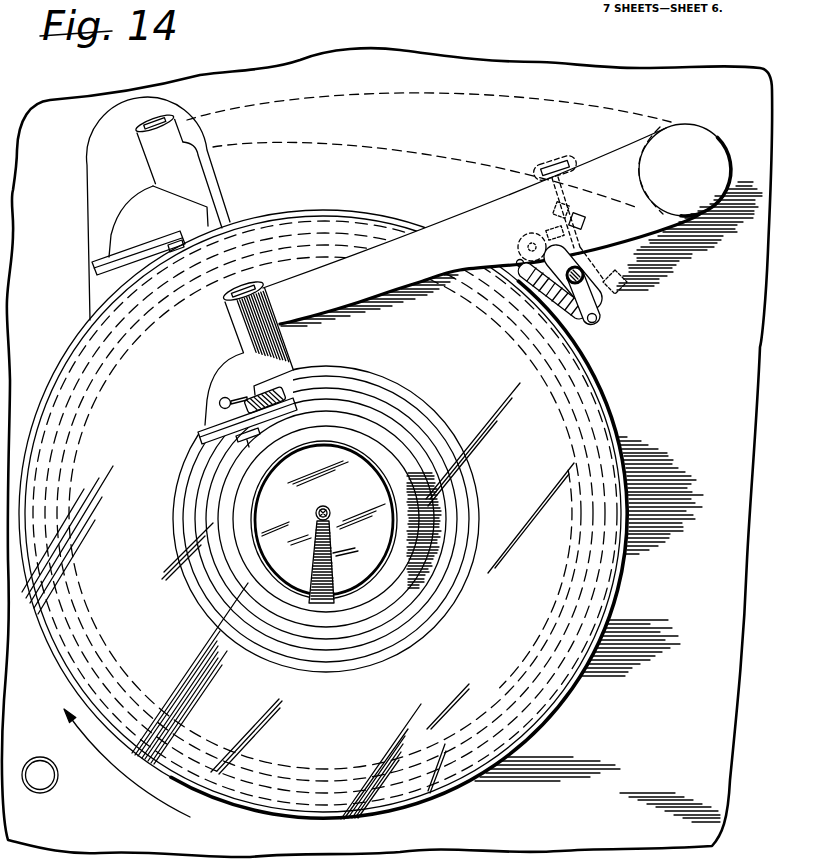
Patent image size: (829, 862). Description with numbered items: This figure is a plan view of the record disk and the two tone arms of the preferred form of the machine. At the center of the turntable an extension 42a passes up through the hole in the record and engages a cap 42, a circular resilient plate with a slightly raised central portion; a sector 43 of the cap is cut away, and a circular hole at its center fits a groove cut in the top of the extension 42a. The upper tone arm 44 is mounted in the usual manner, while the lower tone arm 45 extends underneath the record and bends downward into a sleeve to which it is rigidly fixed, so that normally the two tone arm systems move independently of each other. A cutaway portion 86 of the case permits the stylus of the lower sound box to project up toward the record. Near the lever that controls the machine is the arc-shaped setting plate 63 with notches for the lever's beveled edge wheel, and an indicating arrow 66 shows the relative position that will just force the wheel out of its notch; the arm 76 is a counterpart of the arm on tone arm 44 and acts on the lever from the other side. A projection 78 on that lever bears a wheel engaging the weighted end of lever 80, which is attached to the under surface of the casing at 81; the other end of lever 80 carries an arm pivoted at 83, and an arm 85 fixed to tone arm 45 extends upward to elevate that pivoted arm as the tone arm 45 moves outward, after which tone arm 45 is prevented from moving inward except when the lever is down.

The cap 42 is at (326, 519).
The extension of the turntable 42a is at (325, 505).
The sector of the cap 43 is at (335, 541).
The tone arm 44 is at (540, 200).
The tone arm 45 is at (473, 105).
The setting plate 63 is at (603, 318).
The indicating arrow 66 is at (565, 287).
The arm 76 is at (518, 262).
The projection 78 is at (584, 268).
The lever 80 is at (582, 244).
The attachment point of lever to casing 81 is at (585, 222).
The pivot 83 is at (567, 210).
The arm 85 is at (566, 167).
The cutaway portion of the case 86 is at (158, 208).